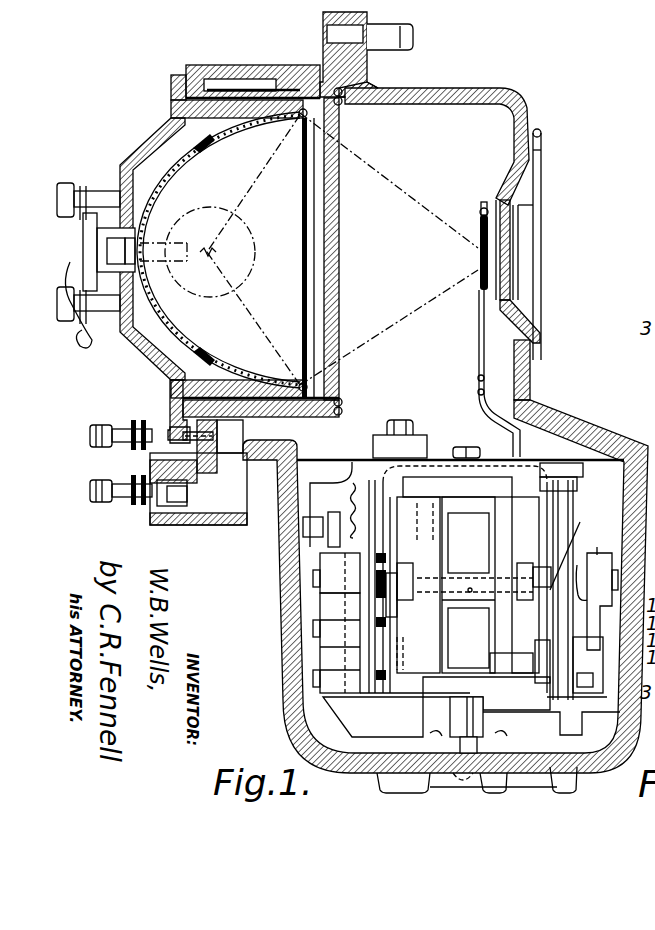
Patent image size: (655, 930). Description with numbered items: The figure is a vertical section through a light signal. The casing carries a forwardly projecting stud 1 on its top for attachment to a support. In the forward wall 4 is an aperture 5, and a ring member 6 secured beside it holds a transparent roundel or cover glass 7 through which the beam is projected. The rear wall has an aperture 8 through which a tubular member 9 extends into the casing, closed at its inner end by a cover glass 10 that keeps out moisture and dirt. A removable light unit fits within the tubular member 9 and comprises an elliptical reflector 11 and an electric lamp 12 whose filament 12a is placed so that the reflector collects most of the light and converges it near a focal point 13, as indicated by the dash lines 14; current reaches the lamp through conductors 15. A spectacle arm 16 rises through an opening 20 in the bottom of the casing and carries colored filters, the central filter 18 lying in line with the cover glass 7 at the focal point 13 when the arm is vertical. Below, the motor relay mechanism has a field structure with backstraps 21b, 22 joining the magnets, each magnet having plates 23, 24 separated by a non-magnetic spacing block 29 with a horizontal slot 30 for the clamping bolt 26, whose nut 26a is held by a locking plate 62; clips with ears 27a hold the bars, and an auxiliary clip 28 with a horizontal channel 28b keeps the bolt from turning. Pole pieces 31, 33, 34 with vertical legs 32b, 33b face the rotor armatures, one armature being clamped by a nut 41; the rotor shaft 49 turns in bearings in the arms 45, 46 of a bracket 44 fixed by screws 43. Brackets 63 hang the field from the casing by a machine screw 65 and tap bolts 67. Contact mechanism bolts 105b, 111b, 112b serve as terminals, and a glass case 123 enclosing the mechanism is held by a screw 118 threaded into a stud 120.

The stud 1 is at (413, 35).
The forward wall 4 is at (527, 383).
The aperture 5 is at (514, 345).
The ring member 6 is at (541, 184).
The roundel or cover glass 7 is at (512, 266).
The aperture 8 is at (208, 82).
The tubular member 9 is at (281, 100).
The cover glass 10 is at (339, 136).
The elliptical reflector 11 is at (232, 138).
The electric lamp 12 is at (248, 232).
The filament 12a is at (207, 252).
The focal point 13 is at (478, 252).
The dash lines 14 is at (423, 215).
The conductors 15 is at (84, 286).
The spectacle arm 16 is at (479, 354).
The filter 18 is at (478, 278).
The opening 20 is at (297, 450).
The backstrap 21b is at (418, 585).
The backstrap 22 is at (498, 690).
The plate 23 is at (476, 507).
The plate 24 is at (463, 668).
The clamping bolt 26 is at (460, 584).
The nut 26a is at (579, 548).
The ears 27a is at (410, 567).
The auxiliary clip 28 is at (402, 616).
The horizontal channel 28b is at (336, 573).
The spacing block 29 is at (450, 617).
The horizontal slot 30 is at (469, 592).
The pole piece 31 is at (400, 533).
The vertical leg 32b is at (543, 518).
The pole piece 33 is at (430, 708).
The vertical leg 33b is at (396, 661).
The pole piece 34 is at (537, 651).
The nut 41 is at (590, 572).
The screws 43 is at (430, 734).
The bracket 44 is at (543, 715).
The arm 45 is at (597, 541).
The arm 46 is at (327, 558).
The shaft 49 is at (561, 658).
The locking plate 62 is at (540, 622).
The bracket 63 is at (583, 472).
The machine screw 65 is at (464, 447).
The tap bolt 67 is at (403, 413).
The bolt 105b is at (318, 632).
The bolt 111b is at (320, 581).
The bolt 112b is at (316, 688).
The screw 118 is at (487, 785).
The stud 120 is at (455, 740).
The glass case 123 is at (285, 733).